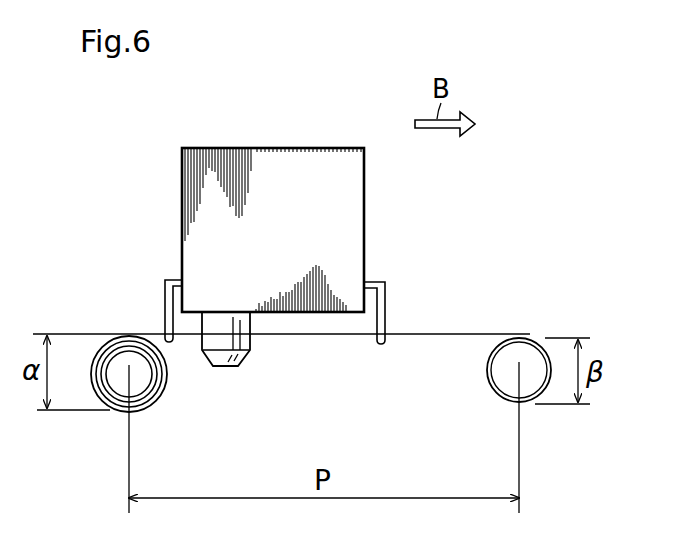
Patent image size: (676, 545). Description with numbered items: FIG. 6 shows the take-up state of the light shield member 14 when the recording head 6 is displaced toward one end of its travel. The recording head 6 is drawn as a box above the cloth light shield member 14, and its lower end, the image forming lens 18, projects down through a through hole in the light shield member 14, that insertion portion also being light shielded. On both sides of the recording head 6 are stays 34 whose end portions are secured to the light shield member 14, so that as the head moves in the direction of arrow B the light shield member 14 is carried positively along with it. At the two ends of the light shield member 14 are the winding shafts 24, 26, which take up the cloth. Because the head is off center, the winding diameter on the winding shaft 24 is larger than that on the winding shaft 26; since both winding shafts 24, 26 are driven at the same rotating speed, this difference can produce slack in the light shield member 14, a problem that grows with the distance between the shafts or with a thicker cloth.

The recording head 6 is at (348, 186).
The light shield member 14 is at (440, 334).
The image forming lens 18 is at (238, 342).
The winding shaft 24 is at (113, 360).
The winding shaft 26 is at (527, 352).
The stays 34 is at (165, 294).